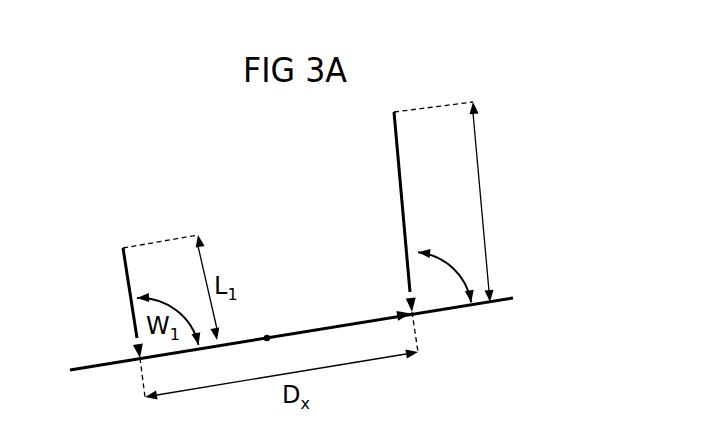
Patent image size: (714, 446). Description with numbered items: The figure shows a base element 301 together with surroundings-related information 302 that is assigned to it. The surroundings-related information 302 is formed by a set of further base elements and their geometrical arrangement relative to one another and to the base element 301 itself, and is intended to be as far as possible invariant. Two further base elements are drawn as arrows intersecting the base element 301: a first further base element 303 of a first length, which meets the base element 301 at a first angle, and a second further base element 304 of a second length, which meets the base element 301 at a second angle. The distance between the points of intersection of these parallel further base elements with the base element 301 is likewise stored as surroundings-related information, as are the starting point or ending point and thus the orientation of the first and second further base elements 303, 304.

The base element 301 is at (438, 312).
The surroundings-related information 302 is at (520, 140).
The first further base element 303 is at (123, 283).
The second further base element 304 is at (395, 198).